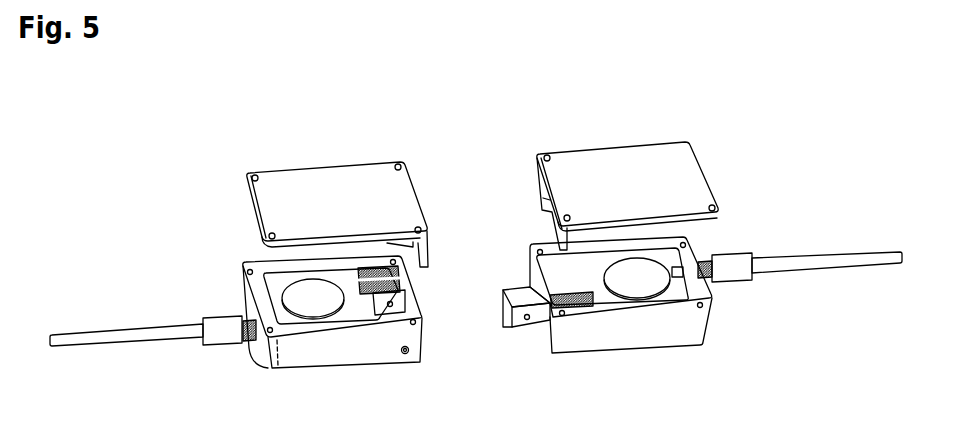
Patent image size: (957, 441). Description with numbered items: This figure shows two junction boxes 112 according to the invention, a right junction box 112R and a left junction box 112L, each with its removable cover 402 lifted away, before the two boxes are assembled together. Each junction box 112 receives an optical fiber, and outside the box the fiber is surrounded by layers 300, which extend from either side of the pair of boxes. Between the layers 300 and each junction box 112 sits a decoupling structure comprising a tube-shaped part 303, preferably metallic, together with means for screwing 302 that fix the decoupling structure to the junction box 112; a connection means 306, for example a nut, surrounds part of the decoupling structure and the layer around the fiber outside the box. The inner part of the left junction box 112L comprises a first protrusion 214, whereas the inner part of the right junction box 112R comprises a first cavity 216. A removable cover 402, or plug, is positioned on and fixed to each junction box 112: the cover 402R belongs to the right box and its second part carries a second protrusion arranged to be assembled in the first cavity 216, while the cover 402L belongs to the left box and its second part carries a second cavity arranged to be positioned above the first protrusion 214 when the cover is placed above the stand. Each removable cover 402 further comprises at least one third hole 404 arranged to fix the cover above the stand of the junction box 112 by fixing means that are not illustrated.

The junction box 112 is at (477, 335).
The junction box 112R is at (340, 343).
The junction box 112L is at (640, 327).
The first protrusion 214 is at (515, 293).
The first cavity 216 is at (405, 310).
The layers 300 is at (103, 335).
The means for screwing 302 is at (252, 338).
The tube-shaped part 303 is at (495, 347).
The connection means 306 is at (222, 325).
The removable cover 402 is at (467, 167).
The removable cover 402R is at (290, 190).
The removable cover 402L is at (637, 167).
The third hole 404 is at (398, 165).